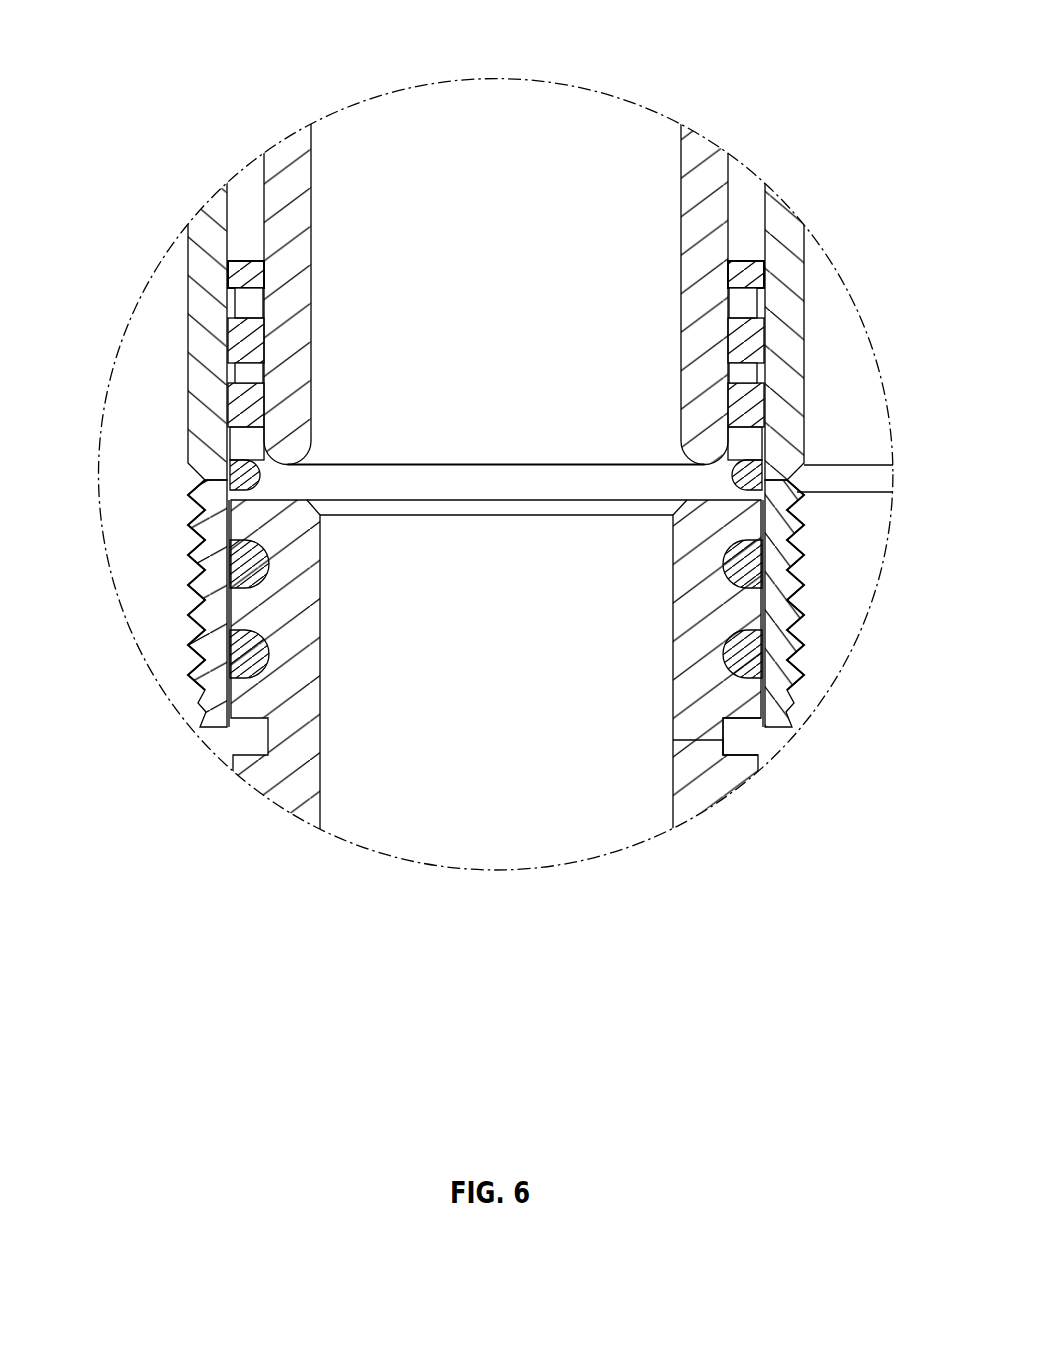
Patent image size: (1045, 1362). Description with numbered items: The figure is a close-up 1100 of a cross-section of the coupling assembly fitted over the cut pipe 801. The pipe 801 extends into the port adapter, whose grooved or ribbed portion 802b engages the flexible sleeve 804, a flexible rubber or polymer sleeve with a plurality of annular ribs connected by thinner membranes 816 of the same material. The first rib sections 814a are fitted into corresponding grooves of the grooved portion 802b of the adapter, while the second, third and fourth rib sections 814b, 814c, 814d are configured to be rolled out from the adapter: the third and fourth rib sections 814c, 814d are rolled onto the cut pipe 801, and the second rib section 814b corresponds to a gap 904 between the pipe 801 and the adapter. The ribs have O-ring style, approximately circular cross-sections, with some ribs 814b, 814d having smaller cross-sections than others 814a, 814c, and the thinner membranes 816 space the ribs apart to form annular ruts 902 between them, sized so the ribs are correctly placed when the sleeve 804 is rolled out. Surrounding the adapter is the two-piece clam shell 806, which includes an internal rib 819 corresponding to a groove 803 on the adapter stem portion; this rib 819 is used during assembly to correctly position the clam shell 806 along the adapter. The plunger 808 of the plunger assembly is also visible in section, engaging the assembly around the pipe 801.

The cut pipe 801 is at (695, 172).
The plunger 808 is at (743, 200).
The grooved or ribbed portion 802b is at (277, 778).
The groove 803 is at (705, 743).
The flexible sleeve 804 is at (218, 513).
The two-piece clam shell 806 is at (812, 587).
The first rib sections 814a is at (235, 564).
The second rib section 814b is at (242, 480).
The third rib section 814c is at (242, 334).
The fourth rib section 814d is at (242, 291).
The thinner membranes 816 is at (227, 607).
The internal rib 819 is at (752, 728).
The annular ruts 902 is at (747, 377).
The gap 904 is at (843, 524).
The close-up 1100 is at (386, 856).